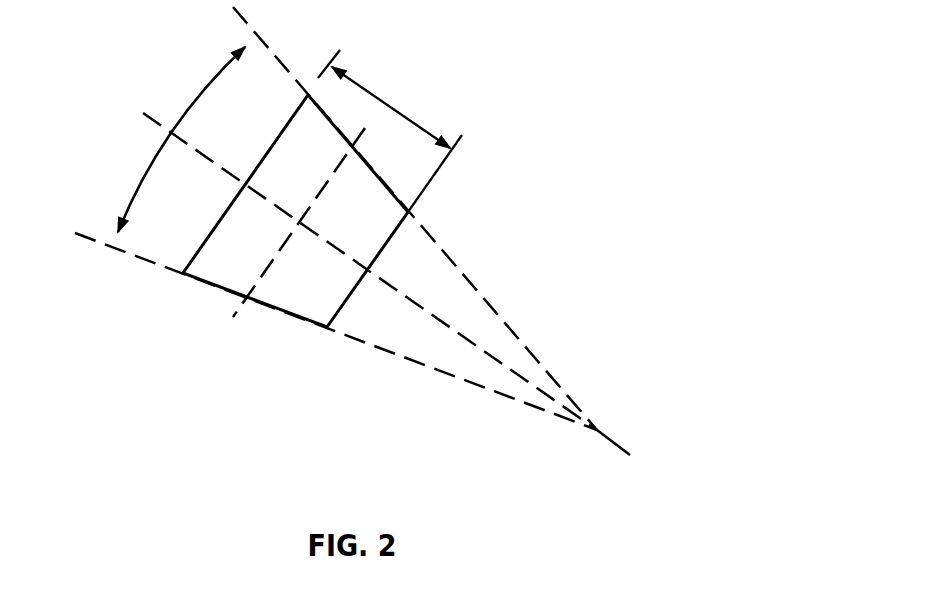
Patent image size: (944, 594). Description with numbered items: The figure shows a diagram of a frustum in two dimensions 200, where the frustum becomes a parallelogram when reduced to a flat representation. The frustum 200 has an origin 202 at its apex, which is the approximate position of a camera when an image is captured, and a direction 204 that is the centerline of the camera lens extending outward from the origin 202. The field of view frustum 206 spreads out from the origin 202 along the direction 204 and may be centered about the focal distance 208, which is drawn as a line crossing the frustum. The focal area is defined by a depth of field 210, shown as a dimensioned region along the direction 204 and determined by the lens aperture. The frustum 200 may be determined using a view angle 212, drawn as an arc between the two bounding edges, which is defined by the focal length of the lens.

The frustum in two dimensions 200 is at (330, 262).
The origin 202 is at (595, 432).
The direction 204 is at (505, 365).
The field of view frustum 206 is at (193, 278).
The focal distance 208 is at (233, 316).
The focal area depth of field 210 is at (393, 108).
The view angle 212 is at (181, 120).